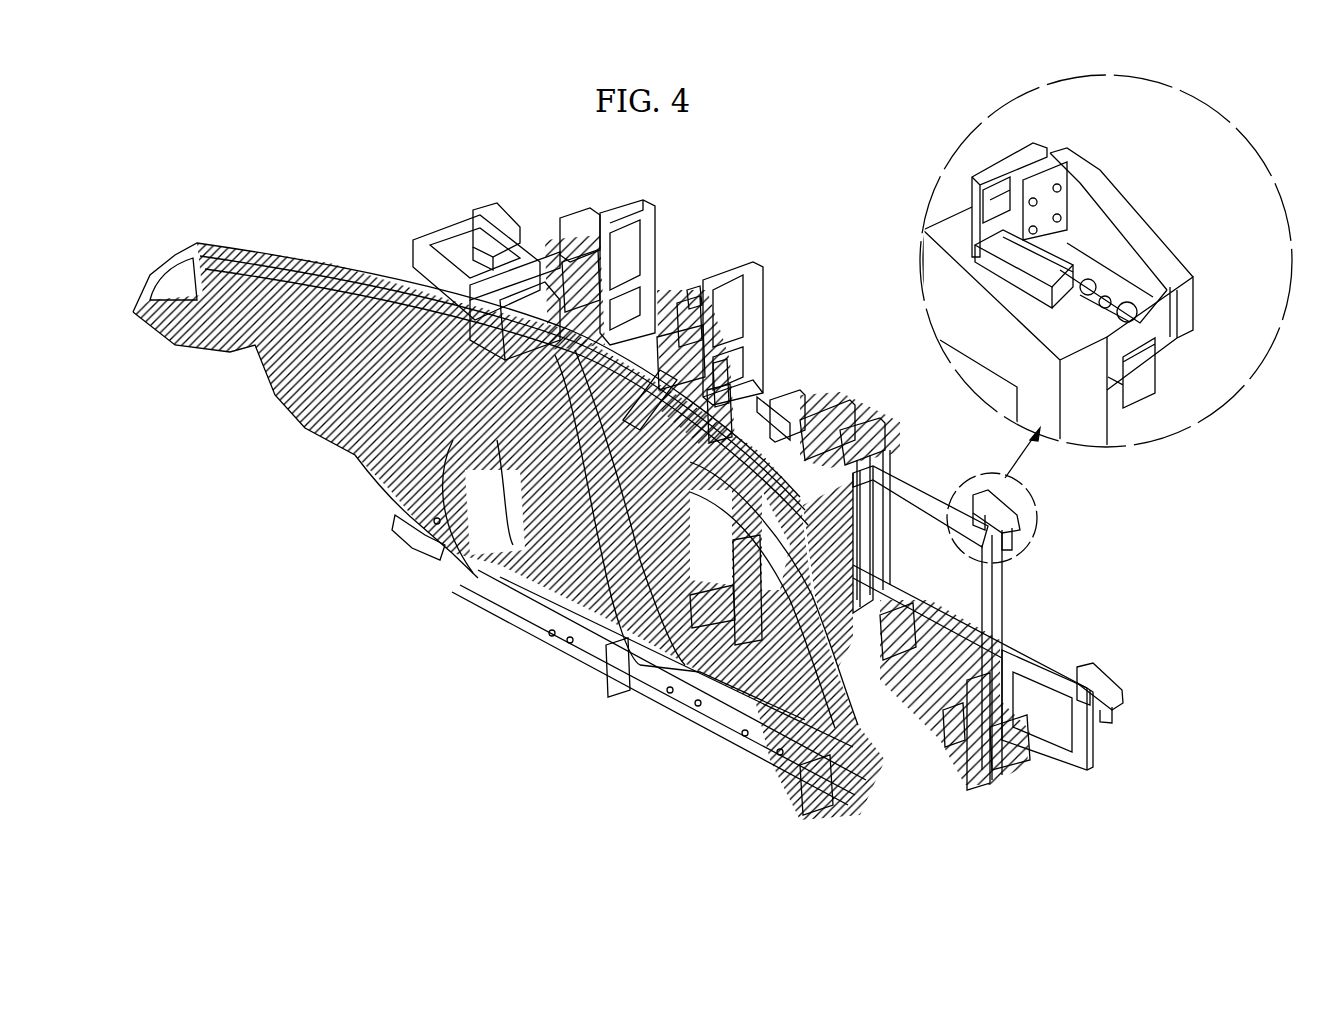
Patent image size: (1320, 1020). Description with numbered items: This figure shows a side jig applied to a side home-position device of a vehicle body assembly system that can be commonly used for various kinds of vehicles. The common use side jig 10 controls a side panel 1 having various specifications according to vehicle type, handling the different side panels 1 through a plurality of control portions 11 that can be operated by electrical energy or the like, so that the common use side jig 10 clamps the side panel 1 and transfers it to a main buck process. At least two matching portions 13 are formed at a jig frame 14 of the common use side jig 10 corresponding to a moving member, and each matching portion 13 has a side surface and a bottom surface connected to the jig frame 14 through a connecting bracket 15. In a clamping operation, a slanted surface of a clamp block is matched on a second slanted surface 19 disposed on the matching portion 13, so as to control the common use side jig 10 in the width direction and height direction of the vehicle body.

The side panel 1 is at (465, 565).
The common use side jig 10 is at (785, 380).
The control portion 11 is at (412, 543).
The matching portion 13 is at (518, 210).
The jig frame 14 is at (918, 482).
The connecting bracket 15 is at (1000, 253).
The second slanted surface 19 is at (1130, 290).